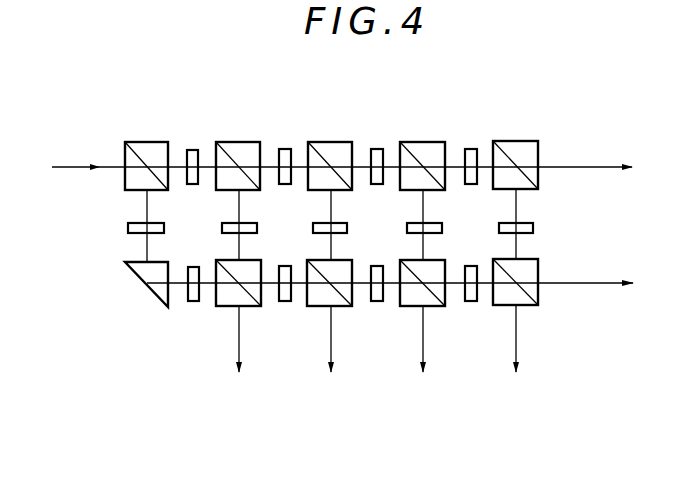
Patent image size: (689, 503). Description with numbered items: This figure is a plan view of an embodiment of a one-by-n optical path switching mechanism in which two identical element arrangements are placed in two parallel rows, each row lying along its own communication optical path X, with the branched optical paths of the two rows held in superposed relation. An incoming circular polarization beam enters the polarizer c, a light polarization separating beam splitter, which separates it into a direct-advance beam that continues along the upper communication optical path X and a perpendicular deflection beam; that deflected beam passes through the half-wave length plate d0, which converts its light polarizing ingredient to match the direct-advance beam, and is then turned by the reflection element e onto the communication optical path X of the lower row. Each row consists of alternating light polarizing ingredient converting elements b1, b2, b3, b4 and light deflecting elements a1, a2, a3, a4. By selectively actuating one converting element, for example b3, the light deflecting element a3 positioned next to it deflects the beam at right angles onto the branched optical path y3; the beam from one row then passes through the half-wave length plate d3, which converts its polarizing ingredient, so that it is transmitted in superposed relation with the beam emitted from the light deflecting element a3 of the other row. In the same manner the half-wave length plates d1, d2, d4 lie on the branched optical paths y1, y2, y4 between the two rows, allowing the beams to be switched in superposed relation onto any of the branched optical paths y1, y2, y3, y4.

The polarizer c is at (146, 142).
The reflection element e is at (149, 293).
The light deflecting element a1 is at (242, 221).
The light deflecting element a2 is at (337, 221).
The light deflecting element a3 is at (429, 221).
The light deflecting element a4 is at (522, 221).
The light polarizing ingredient converting element b1 is at (194, 221).
The light polarizing ingredient converting element b2 is at (288, 221).
The light polarizing ingredient converting element b3 is at (383, 221).
The light polarizing ingredient converting element b4 is at (477, 221).
The half-wave length plate d0 is at (161, 228).
The half-wave length plate d1 is at (252, 228).
The half-wave length plate d2 is at (344, 228).
The half-wave length plate d3 is at (439, 228).
The half-wave length plate d4 is at (531, 228).
The communication optical path X is at (343, 211).
The branched optical path y1 is at (243, 353).
The branched optical path y2 is at (335, 353).
The branched optical path y3 is at (428, 353).
The branched optical path y4 is at (521, 353).